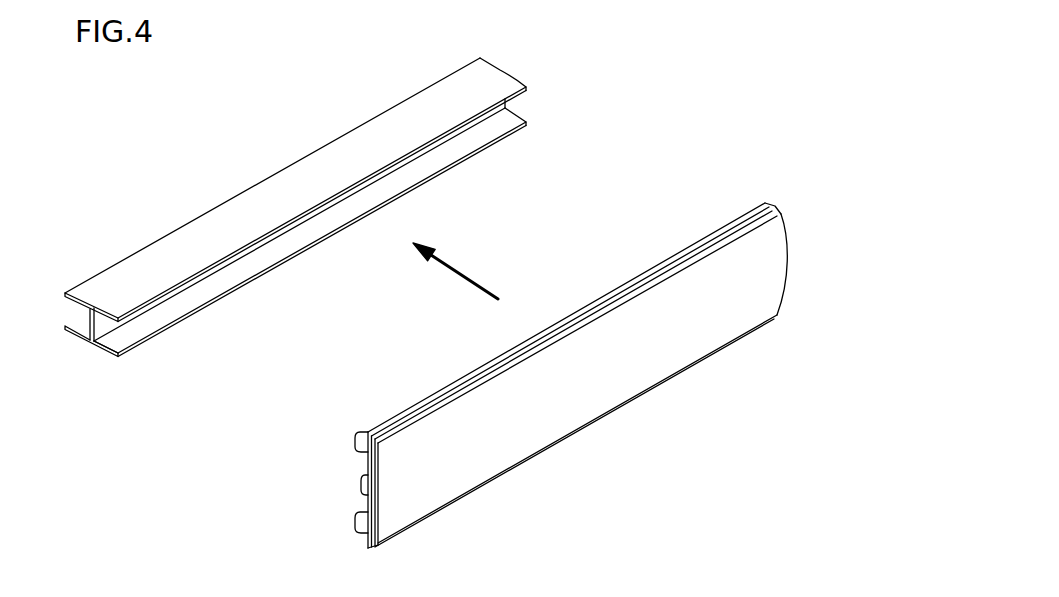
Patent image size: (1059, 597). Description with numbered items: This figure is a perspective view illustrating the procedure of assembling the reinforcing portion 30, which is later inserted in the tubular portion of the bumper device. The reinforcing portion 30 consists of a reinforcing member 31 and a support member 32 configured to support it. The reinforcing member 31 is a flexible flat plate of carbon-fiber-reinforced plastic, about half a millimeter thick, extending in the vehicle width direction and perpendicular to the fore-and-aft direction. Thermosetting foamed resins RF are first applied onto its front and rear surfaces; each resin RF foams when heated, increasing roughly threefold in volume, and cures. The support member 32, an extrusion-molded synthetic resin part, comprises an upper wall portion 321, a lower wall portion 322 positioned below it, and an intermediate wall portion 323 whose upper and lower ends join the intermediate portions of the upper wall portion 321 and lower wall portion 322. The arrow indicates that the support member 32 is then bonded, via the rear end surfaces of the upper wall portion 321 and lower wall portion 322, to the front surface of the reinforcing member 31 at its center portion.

The reinforcing portion 30 is at (634, 112).
The reinforcing member 31 is at (535, 400).
The support member 32 is at (295, 222).
The upper wall portion 321 is at (103, 288).
The lower wall portion 322 is at (240, 290).
The intermediate wall portion 323 is at (103, 324).
The thermosetting foamed resin RF is at (356, 443).